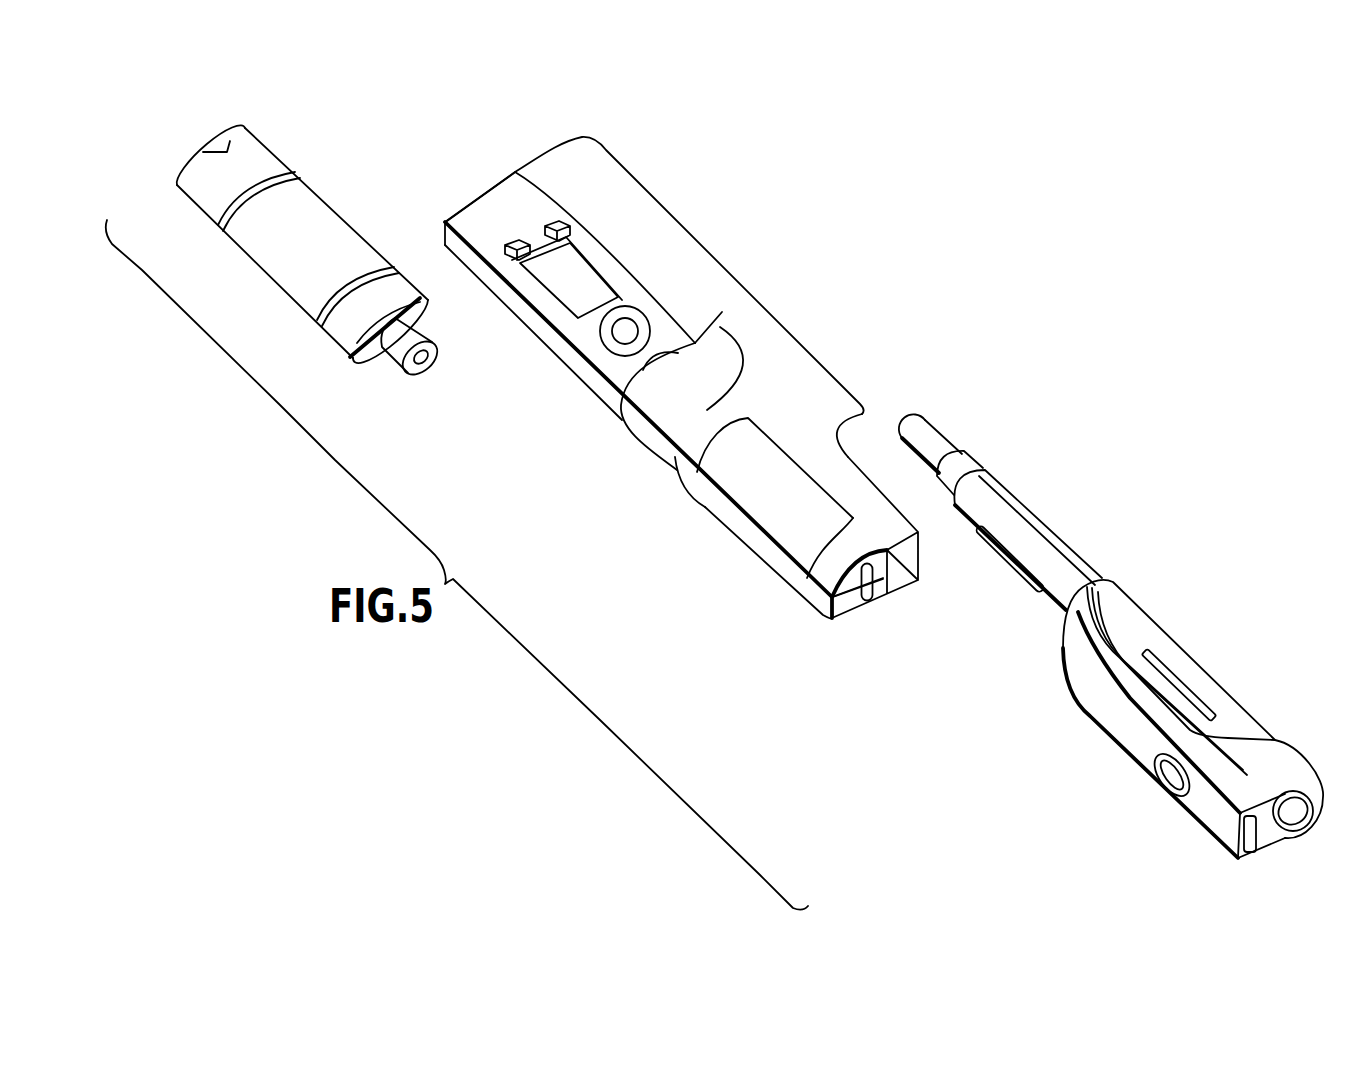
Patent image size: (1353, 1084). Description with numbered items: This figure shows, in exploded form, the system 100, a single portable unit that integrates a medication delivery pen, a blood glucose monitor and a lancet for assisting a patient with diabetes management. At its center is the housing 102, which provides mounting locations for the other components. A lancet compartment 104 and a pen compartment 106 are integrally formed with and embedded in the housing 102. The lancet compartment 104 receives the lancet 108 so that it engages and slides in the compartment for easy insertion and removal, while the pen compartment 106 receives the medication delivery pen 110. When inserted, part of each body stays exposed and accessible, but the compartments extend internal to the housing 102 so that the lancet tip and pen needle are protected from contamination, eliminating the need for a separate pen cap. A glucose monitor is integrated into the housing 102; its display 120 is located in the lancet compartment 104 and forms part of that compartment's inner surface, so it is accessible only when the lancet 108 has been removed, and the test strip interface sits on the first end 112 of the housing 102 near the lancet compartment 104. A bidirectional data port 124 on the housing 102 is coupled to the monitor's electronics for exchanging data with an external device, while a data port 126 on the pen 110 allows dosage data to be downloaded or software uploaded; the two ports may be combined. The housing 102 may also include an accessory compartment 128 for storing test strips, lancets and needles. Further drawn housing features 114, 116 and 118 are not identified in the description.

The system 100 is at (680, 646).
The housing 102 is at (697, 258).
The lancet compartment 104 is at (592, 324).
The pen compartment 106 is at (850, 430).
The lancet 108 is at (270, 247).
The medication delivery pen 110 is at (1063, 548).
The first end 112 is at (490, 191).
The end face 114 is at (854, 608).
The flap 116 is at (799, 358).
The bottom edge 118 is at (610, 410).
The display 120 is at (560, 285).
The bidirectional data port 124 is at (873, 598).
The data port 126 is at (1254, 830).
The accessory compartment 128 is at (738, 490).